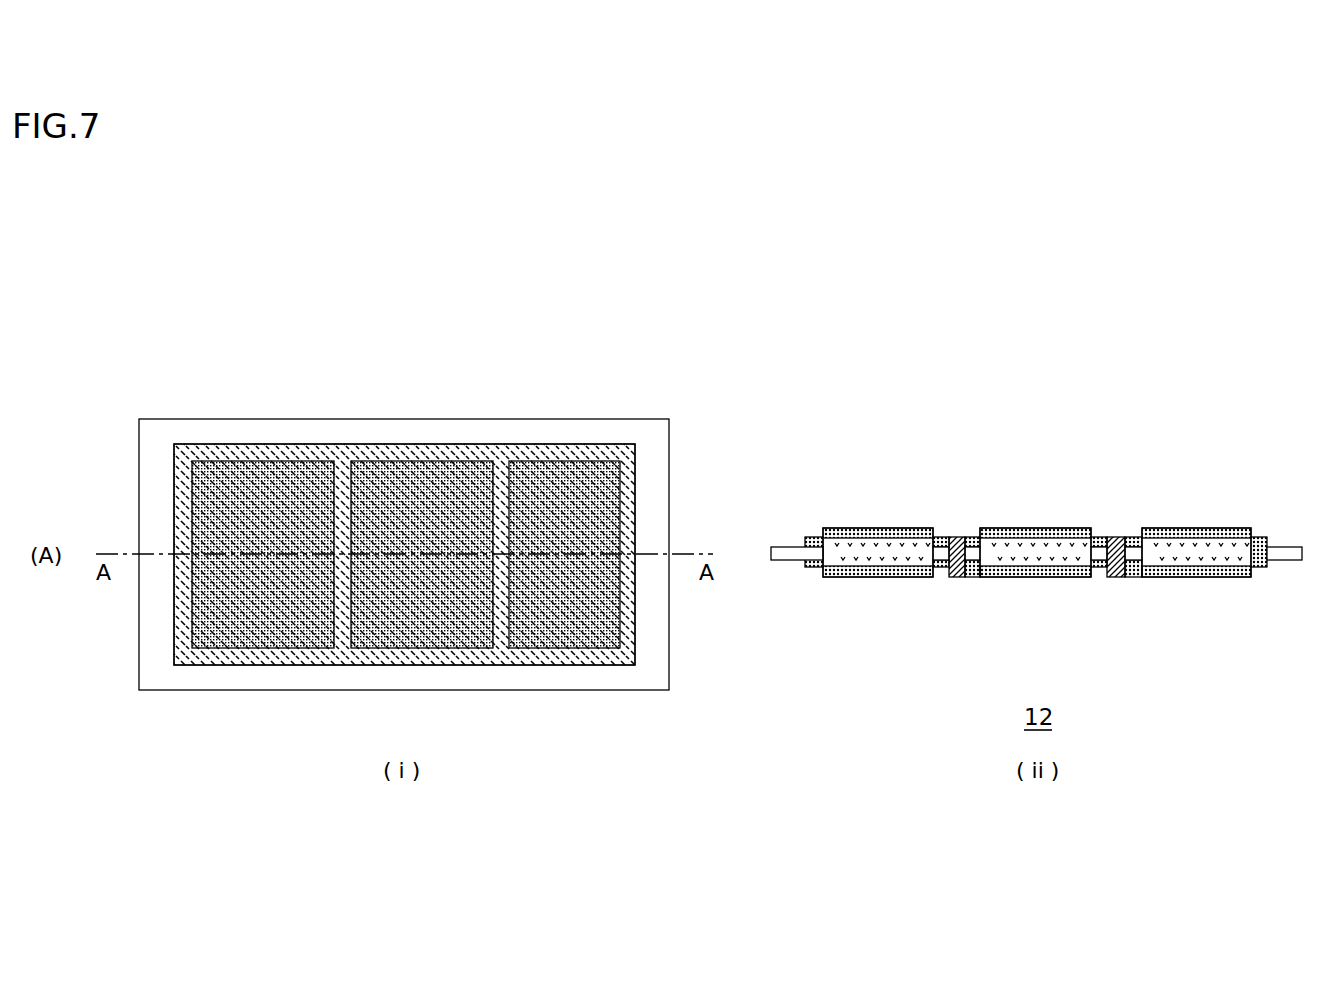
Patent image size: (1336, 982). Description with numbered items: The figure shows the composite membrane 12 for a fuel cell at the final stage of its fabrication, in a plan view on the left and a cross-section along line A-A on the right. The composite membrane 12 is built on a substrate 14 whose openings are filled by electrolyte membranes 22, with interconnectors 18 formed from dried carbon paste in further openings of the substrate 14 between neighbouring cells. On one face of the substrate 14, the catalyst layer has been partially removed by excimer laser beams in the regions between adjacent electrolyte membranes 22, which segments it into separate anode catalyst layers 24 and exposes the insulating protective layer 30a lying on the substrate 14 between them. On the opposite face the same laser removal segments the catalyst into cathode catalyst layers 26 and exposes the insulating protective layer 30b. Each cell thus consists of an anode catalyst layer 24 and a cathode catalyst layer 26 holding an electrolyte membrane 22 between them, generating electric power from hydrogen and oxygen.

The composite membrane 12 is at (420, 730).
The substrate 14 is at (576, 432).
The interconnector 18 is at (958, 577).
The electrolyte membrane 22 is at (897, 577).
The anode catalyst layer 24 is at (262, 470).
The cathode catalyst layer 26 is at (882, 577).
The insulating protective layer 30a is at (622, 447).
The insulating protective layer 30b is at (815, 570).